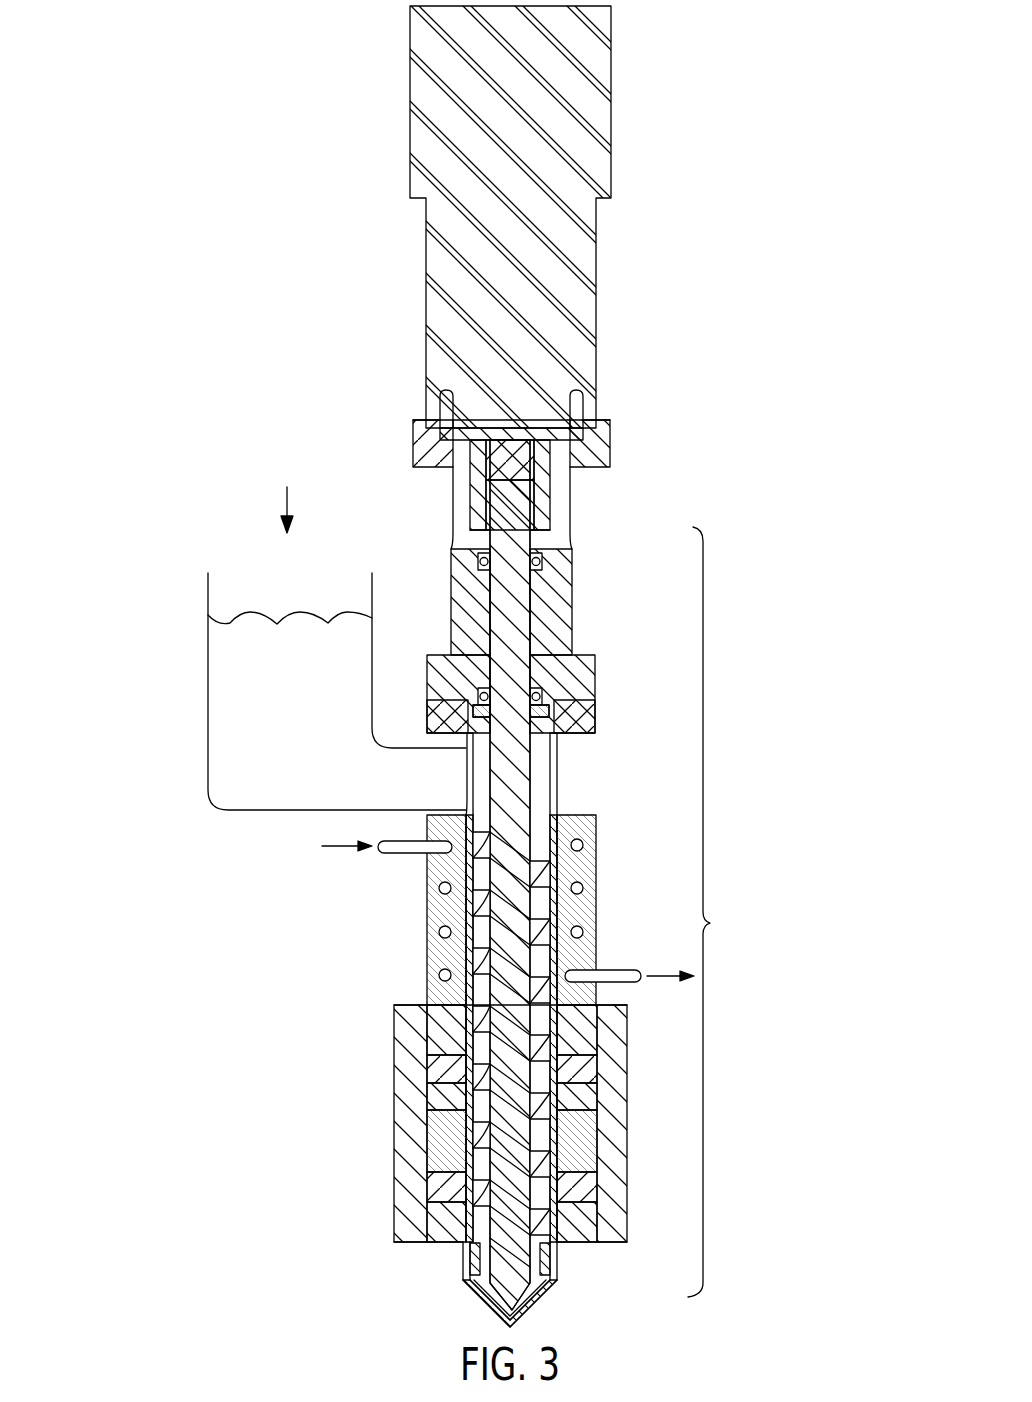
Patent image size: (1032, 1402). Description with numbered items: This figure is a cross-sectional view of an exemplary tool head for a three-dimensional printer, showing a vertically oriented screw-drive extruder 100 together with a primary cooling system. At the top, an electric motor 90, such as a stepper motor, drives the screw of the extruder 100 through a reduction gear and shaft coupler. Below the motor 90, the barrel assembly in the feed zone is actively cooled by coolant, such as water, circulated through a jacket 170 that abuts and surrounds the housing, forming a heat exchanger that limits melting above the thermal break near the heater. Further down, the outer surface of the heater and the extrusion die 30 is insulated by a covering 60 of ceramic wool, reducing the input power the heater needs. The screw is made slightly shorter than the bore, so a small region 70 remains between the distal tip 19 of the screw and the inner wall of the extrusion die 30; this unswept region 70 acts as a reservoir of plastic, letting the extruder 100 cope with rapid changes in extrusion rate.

The motor 90 is at (598, 300).
The jacket 170 is at (590, 888).
The covering 60 is at (620, 1138).
The distal tip 19 is at (463, 1290).
The extrusion die 30 is at (480, 1295).
The small region 70 is at (536, 1300).
The extruder 100 is at (712, 912).